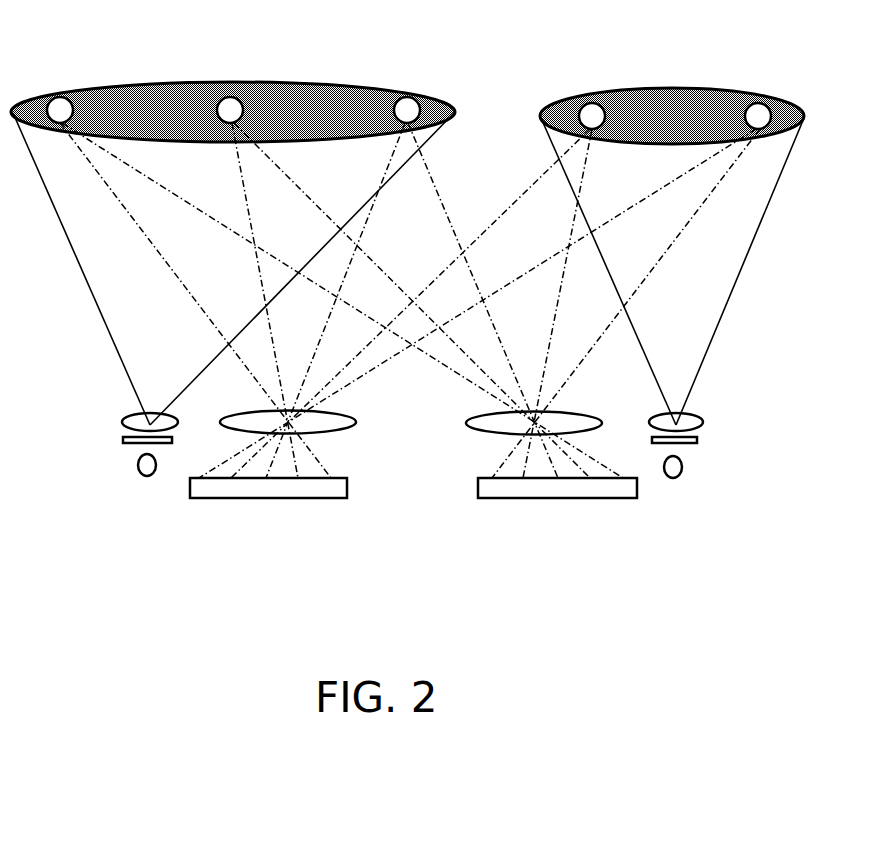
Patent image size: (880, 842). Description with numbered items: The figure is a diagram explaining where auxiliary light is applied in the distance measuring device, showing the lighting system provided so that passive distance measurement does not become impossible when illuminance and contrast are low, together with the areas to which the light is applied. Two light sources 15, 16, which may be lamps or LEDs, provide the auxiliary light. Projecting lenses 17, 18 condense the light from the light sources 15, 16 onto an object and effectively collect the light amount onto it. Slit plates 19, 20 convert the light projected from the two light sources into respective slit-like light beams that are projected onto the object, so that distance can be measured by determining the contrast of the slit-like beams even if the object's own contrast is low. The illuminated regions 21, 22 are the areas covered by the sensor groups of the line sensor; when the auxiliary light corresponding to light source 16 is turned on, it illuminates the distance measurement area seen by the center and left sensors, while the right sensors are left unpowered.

The light source 15 is at (681, 470).
The light source 16 is at (139, 472).
The projecting lens 17 is at (704, 422).
The projecting lens 18 is at (122, 422).
The slit plate 19 is at (123, 440).
The slit plate 20 is at (697, 444).
The left illumination unit 21 is at (260, 99).
The right illumination unit 22 is at (627, 102).